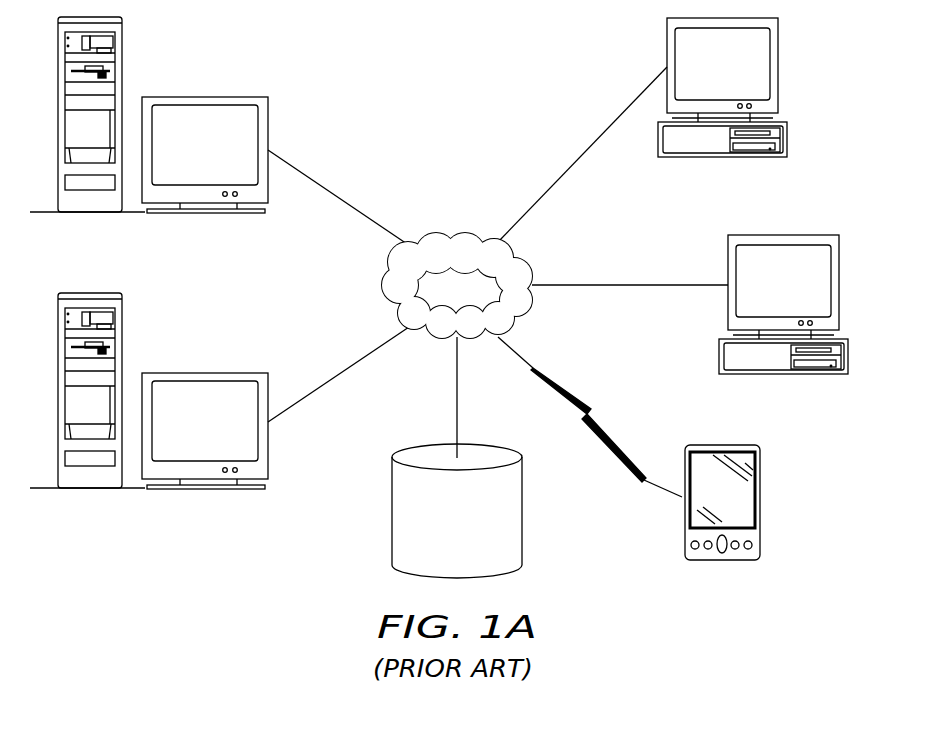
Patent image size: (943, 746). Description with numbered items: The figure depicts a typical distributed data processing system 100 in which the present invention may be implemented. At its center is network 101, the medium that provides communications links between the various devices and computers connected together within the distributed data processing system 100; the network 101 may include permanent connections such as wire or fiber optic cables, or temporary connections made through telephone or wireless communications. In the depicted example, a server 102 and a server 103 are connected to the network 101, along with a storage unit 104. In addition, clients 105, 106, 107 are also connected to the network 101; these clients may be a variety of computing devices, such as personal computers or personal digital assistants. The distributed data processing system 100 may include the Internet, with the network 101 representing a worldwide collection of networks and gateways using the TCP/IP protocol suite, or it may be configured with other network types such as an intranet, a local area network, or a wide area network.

The distributed data processing system 100 is at (517, 62).
The network 101 is at (475, 313).
The server 102 is at (227, 437).
The server 103 is at (227, 158).
The storage unit 104 is at (436, 549).
The client 105 is at (745, 75).
The client 106 is at (806, 296).
The client 107 is at (763, 503).